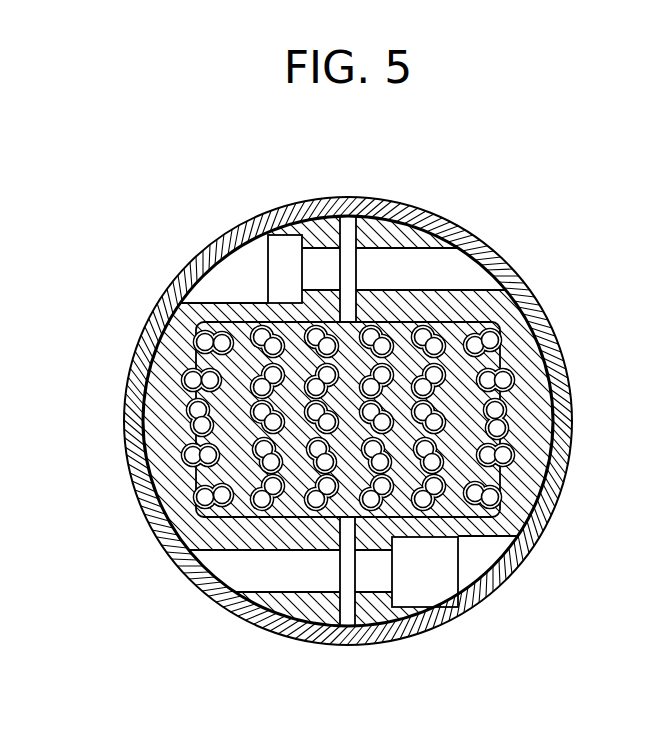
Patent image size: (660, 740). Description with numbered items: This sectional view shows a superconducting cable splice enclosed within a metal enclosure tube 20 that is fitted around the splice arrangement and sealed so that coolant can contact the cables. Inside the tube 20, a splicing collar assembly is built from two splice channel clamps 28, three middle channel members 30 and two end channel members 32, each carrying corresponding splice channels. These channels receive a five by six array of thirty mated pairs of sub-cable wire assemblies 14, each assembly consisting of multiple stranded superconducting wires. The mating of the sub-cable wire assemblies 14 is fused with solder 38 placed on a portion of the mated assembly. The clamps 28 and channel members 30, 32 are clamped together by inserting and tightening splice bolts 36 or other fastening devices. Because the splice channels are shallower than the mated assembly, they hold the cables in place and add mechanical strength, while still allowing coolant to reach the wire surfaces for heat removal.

The metal enclosure tube 20 is at (134, 480).
The splice channel clamp 28 is at (338, 215).
The splice bolt 36 is at (408, 246).
The sub-cable wire assembly 14 is at (500, 416).
The solder 38 is at (500, 420).
The end channel member 32 is at (237, 518).
The middle channel member 30 is at (370, 523).